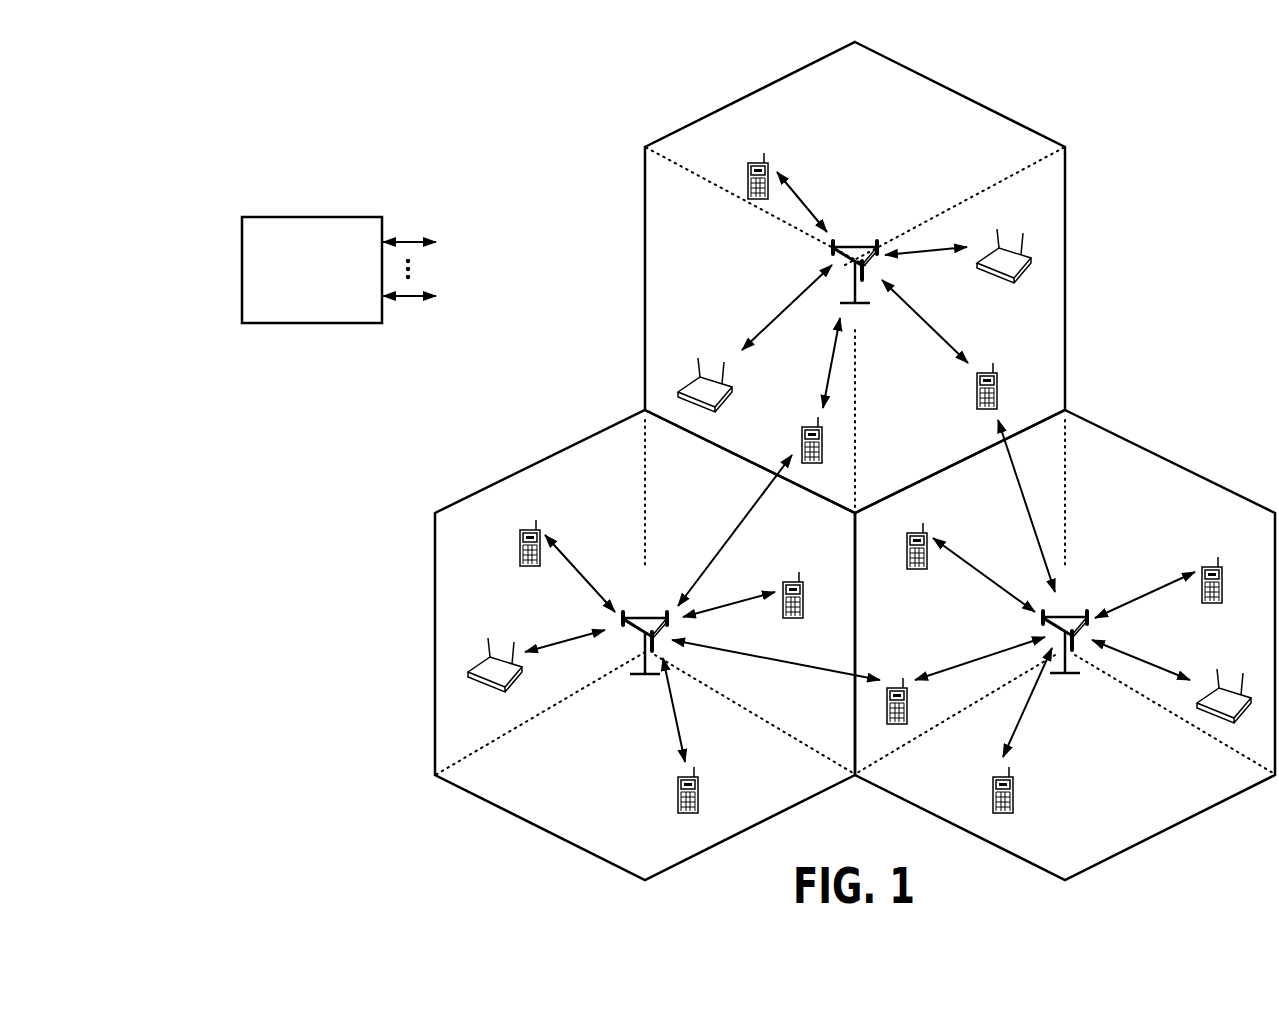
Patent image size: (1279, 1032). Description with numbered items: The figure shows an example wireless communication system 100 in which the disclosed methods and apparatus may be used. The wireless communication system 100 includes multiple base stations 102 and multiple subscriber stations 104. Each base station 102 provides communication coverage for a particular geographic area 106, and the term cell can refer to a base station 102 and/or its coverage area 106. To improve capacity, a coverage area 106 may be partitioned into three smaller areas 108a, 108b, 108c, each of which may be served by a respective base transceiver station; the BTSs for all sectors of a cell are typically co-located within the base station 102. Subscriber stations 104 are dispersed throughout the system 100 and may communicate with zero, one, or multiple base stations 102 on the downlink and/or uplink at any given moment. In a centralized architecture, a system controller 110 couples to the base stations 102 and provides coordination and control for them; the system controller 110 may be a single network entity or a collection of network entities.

The wireless communication system 100 is at (1245, 95).
The base station 102 is at (853, 245).
The subscriber station 104 is at (748, 175).
The geographic area 106 is at (961, 93).
The smaller area 108a is at (878, 99).
The smaller area 108b is at (703, 247).
The smaller area 108c is at (948, 449).
The system controller 110 is at (310, 217).